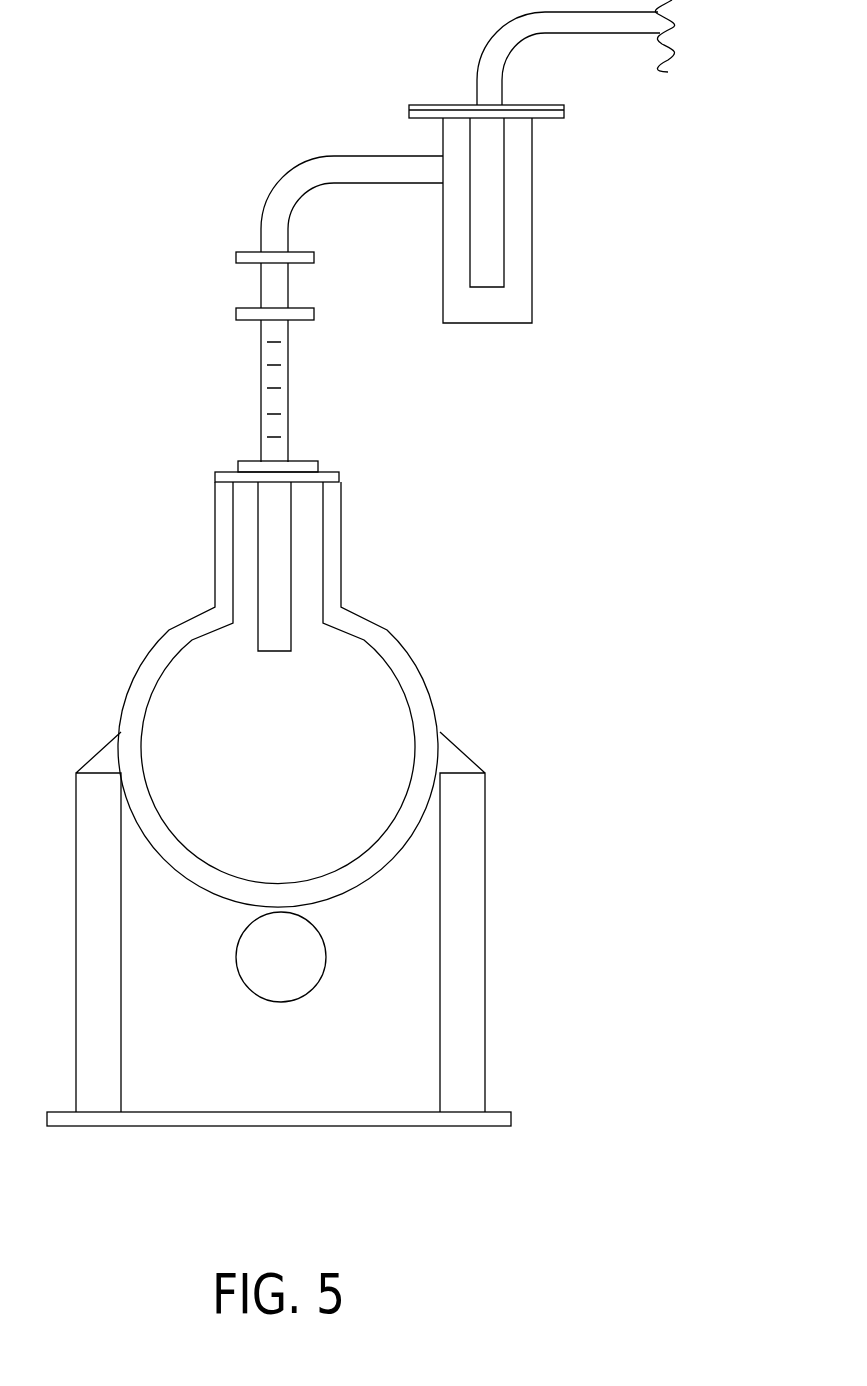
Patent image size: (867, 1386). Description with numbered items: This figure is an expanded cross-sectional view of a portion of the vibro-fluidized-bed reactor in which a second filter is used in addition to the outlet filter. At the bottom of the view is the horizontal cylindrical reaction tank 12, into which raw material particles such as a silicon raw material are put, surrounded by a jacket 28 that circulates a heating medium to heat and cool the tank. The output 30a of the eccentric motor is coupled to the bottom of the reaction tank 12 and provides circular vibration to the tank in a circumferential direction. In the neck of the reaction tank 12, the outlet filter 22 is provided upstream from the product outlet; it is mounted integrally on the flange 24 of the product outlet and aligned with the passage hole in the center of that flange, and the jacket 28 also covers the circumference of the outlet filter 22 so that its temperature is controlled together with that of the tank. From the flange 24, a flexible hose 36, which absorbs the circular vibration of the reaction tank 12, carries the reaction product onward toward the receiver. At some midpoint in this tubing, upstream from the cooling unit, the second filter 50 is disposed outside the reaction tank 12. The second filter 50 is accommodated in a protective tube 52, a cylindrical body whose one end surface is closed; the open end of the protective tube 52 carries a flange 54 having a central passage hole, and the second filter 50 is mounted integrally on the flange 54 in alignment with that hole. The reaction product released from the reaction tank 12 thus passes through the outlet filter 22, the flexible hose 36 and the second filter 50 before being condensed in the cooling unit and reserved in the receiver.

The reaction tank 12 is at (324, 562).
The outlet filter 22 is at (258, 562).
The flange 24 is at (329, 471).
The jacket 28 is at (341, 520).
The output 30a is at (279, 1002).
The flexible hose 36 is at (288, 356).
The second filter 50 is at (504, 268).
The protective tube 52 is at (532, 216).
The flange 54 is at (540, 105).